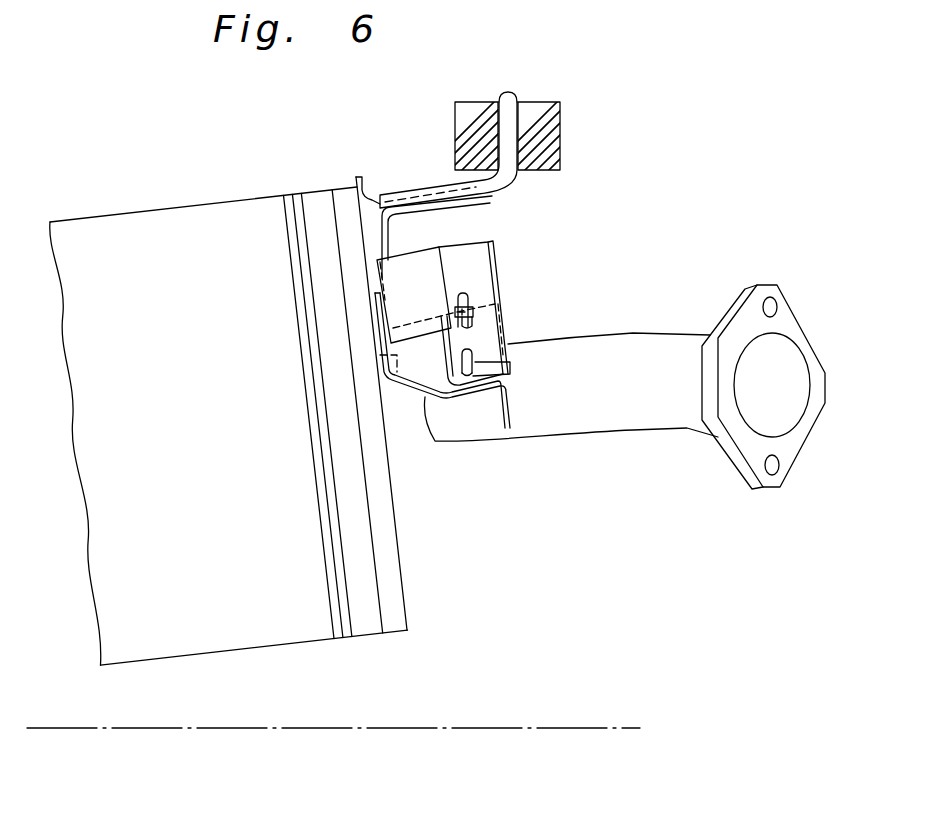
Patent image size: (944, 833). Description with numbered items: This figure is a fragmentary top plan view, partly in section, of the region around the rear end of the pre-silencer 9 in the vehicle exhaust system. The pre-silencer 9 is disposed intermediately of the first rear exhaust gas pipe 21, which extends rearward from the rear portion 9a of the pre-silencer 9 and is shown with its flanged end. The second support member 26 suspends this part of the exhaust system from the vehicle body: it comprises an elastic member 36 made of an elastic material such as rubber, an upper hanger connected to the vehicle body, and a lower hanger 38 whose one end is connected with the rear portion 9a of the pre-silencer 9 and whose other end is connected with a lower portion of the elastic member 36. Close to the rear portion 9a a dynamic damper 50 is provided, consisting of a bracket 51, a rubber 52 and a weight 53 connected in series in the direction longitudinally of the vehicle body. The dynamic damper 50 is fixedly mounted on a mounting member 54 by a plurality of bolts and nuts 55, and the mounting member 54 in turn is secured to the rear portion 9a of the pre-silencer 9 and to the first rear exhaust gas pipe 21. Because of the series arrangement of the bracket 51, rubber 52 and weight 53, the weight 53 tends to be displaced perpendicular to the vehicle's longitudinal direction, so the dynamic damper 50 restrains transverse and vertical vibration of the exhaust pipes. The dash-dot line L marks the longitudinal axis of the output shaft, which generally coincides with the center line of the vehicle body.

The pre-silencer 9 is at (182, 207).
The rear portion of the pre-silencer 9a is at (399, 553).
The first rear exhaust gas pipe 21 is at (617, 333).
The second support member 26 is at (430, 163).
The elastic member 36 is at (561, 138).
The lower hanger 38 is at (518, 188).
The dynamic damper 50 is at (519, 281).
The bracket 51 is at (503, 318).
The rubber 52 is at (463, 246).
The weight 53 is at (403, 250).
The mounting member 54 is at (435, 400).
The bolts and nuts 55 is at (505, 322).
The longitudinal axis of the output shaft L is at (580, 726).